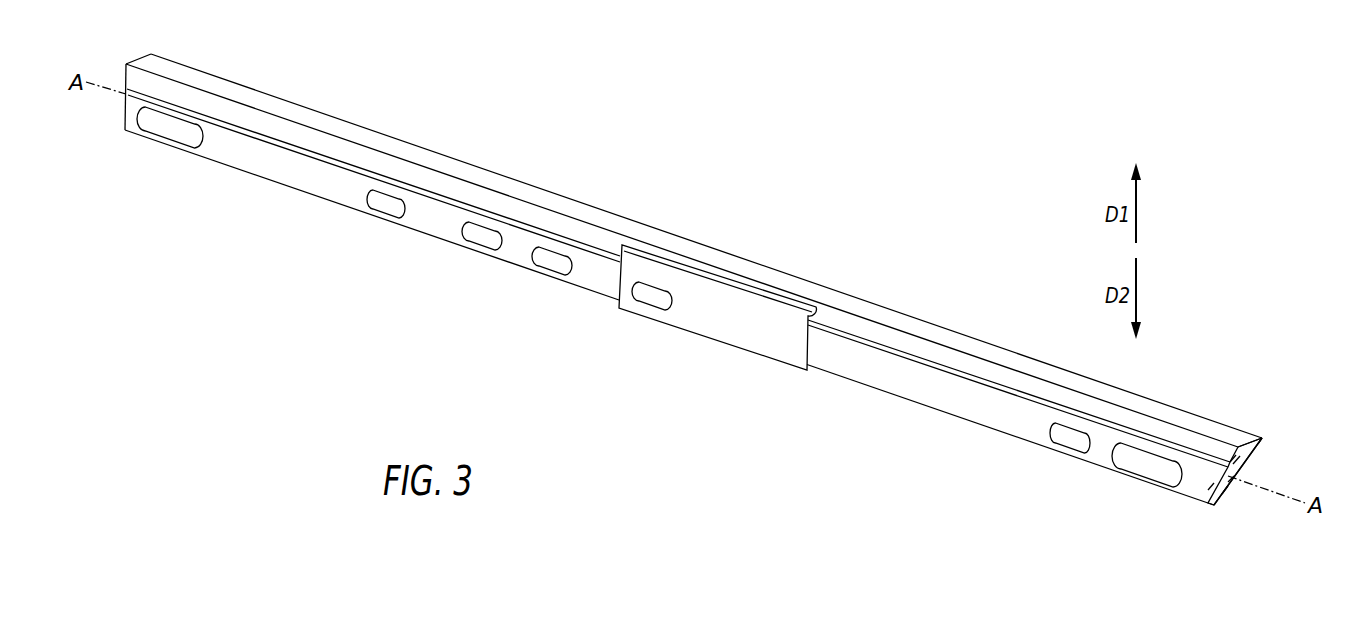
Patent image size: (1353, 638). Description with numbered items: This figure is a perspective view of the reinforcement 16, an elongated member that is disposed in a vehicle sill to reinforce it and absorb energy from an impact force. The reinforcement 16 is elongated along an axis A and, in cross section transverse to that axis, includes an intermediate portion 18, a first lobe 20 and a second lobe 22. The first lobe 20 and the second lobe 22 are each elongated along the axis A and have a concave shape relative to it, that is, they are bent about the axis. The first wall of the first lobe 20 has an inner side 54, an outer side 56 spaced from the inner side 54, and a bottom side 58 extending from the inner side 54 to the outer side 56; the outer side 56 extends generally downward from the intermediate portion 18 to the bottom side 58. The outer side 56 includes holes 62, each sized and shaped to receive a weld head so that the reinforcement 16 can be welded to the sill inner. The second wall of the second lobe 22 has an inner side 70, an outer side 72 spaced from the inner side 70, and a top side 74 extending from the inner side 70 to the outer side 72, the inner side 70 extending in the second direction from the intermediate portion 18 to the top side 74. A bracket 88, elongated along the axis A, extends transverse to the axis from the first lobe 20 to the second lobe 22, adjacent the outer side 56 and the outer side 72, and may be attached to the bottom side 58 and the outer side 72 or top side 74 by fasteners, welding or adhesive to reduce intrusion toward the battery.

The reinforcement 16 is at (690, 285).
The intermediate portion 18 is at (1243, 470).
The first lobe 20 is at (1220, 503).
The second lobe 22 is at (1268, 441).
The inner side 54 is at (1232, 480).
The outer side 56 is at (1212, 488).
The bottom side 58 is at (1226, 491).
The hole 62 is at (170, 141).
The inner side 70 is at (1263, 443).
The outer side 72 is at (1235, 458).
The top side 74 is at (1257, 441).
The bracket 88 is at (757, 354).